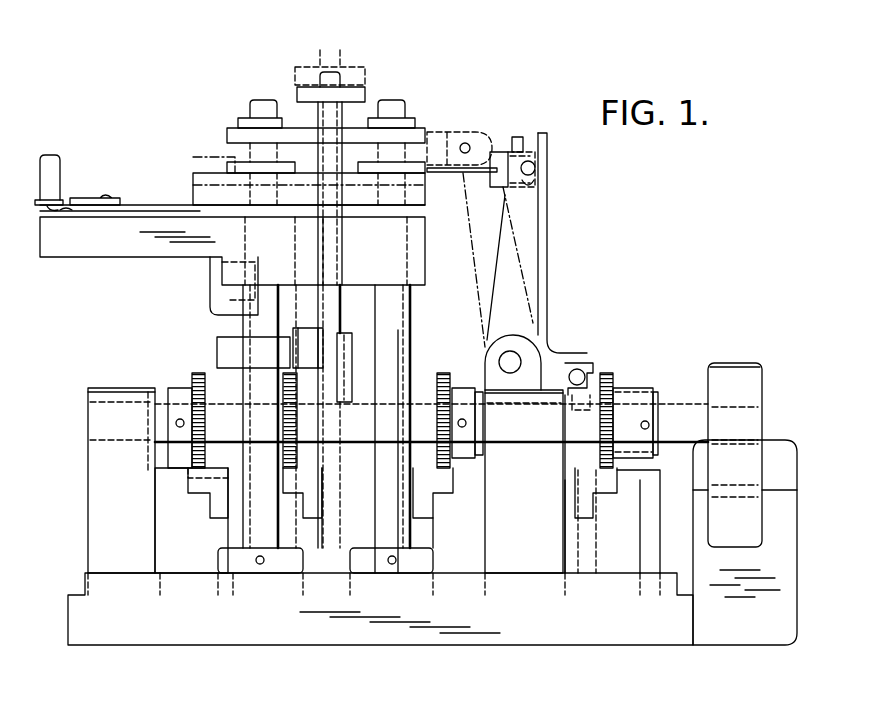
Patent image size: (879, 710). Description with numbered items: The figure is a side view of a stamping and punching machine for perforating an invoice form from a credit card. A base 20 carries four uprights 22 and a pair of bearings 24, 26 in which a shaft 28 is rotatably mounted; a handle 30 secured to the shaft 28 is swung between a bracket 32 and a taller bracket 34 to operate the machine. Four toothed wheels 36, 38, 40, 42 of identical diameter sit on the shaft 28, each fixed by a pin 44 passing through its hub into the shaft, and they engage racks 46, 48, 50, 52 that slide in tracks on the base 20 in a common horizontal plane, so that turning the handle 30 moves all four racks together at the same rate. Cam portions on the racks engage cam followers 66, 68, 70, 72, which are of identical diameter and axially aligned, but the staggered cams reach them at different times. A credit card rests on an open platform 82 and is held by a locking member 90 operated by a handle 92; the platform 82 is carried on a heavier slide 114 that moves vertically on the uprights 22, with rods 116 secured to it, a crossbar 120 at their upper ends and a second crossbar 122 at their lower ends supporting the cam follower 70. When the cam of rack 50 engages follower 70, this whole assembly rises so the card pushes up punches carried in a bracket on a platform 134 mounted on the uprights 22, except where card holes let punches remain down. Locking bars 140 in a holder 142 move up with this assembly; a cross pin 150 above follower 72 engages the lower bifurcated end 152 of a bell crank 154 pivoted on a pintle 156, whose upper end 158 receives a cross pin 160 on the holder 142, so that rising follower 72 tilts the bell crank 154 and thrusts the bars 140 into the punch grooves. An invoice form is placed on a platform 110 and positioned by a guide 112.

The base 20 is at (548, 645).
The uprights 22 is at (410, 296).
The bearing 24 is at (92, 490).
The bearing 26 is at (488, 514).
The shaft 28 is at (678, 405).
The handle 30 is at (760, 372).
The bracket 32 is at (800, 527).
The taller bracket 34 is at (797, 462).
The toothed wheel 36 is at (195, 373).
The toothed wheel 38 is at (283, 380).
The toothed wheel 40 is at (443, 373).
The toothed wheel 42 is at (608, 373).
The pin 44 is at (176, 425).
The rack 46 is at (204, 494).
The rack 48 is at (316, 518).
The rack 50 is at (435, 518).
The rack 52 is at (594, 512).
The cam follower 66 is at (216, 468).
The cam follower 68 is at (306, 469).
The cam follower 70 is at (427, 469).
The cam follower 72 is at (585, 469).
The platform 82 is at (140, 205).
The locking member 90 is at (90, 198).
The handle 92 is at (60, 160).
The platform 110 is at (152, 257).
The guide 112 is at (50, 212).
The slide 114 is at (422, 192).
The rod 116 is at (335, 72).
The crossbar 120 is at (360, 95).
The second crossbar 122 is at (343, 333).
The platform 134 is at (427, 134).
The locking bars 140 is at (478, 172).
The holder 142 is at (535, 171).
The cross pin 150 is at (577, 369).
The lower bifurcated end 152 is at (586, 360).
The bell crank 154 is at (540, 249).
The pintle 156 is at (510, 351).
The upper end 158 is at (540, 133).
The cross pin 160 is at (537, 187).